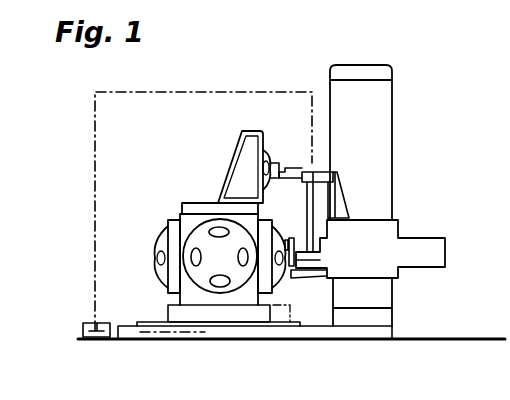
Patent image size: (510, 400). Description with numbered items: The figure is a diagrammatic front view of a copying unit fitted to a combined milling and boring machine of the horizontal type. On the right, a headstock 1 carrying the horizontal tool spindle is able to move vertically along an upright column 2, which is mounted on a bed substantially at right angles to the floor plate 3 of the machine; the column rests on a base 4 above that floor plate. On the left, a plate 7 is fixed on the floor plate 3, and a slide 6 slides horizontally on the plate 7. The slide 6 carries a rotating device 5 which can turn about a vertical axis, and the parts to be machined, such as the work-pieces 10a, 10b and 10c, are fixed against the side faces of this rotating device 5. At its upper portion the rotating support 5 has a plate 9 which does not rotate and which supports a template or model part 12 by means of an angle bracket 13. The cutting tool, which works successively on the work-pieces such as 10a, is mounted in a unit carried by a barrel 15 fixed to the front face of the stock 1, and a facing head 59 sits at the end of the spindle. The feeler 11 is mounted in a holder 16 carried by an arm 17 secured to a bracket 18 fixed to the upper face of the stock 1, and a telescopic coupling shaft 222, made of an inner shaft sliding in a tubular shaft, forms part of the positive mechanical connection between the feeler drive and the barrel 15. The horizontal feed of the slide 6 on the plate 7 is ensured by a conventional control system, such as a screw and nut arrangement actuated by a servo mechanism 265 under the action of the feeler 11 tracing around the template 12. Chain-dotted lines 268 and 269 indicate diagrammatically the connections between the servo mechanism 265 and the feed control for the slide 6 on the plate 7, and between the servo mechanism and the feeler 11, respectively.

The headstock 1 is at (397, 226).
The upright column 2 is at (392, 138).
The floor plate 3 is at (135, 321).
The column base 4 is at (383, 333).
The rotating device 5 is at (180, 216).
The slide 6 is at (168, 312).
The plate 7 is at (305, 320).
The plate 9 is at (205, 208).
The work-piece 10a is at (283, 285).
The work-piece 10b is at (220, 290).
The work-piece 10c is at (160, 236).
The feeler 11 is at (279, 163).
The template 12 is at (265, 150).
The angle bracket 13 is at (245, 136).
The barrel 15 is at (309, 258).
The holder 16 is at (289, 170).
The arm 17 is at (321, 170).
The bracket 18 is at (345, 204).
The facing head 59 is at (324, 276).
The telescopic coupling shaft 222 is at (305, 222).
The servo mechanism 265 is at (83, 330).
The chain-dotted line 268 is at (137, 330).
The chain-dotted line 269 is at (95, 114).